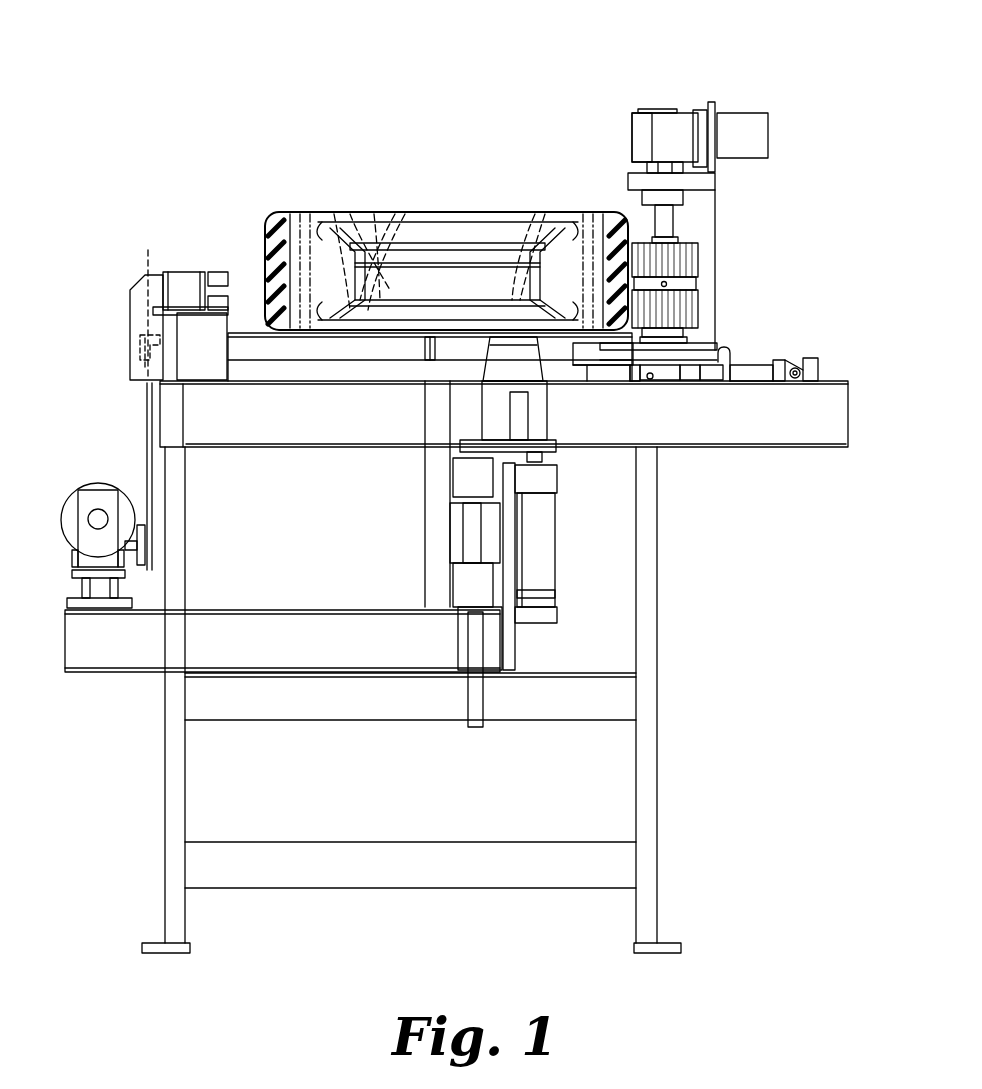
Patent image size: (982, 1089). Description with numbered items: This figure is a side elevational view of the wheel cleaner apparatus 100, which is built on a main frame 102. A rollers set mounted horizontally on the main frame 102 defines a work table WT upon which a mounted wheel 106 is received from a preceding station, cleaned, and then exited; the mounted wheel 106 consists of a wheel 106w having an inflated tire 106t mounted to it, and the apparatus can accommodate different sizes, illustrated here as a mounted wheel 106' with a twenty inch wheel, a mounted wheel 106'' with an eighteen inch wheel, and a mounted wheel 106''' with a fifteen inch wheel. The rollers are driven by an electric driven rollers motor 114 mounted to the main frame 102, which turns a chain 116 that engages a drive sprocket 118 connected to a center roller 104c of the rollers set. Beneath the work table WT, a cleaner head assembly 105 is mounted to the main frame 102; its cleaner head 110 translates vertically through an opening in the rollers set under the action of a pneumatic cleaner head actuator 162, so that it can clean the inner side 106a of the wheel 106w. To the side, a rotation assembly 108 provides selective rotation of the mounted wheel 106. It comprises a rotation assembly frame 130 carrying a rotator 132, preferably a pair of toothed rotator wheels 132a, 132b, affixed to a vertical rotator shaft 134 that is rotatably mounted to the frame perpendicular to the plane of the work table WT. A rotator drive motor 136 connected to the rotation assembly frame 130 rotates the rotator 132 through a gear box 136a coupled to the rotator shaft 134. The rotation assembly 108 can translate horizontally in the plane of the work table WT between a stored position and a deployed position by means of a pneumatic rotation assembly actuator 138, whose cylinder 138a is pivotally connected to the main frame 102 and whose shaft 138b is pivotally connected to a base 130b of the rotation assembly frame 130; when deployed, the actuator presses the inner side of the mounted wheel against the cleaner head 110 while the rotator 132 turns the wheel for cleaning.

The wheel cleaner apparatus 100 is at (711, 76).
The main frame 102 is at (654, 610).
The center roller 104c is at (137, 355).
The cleaner head assembly 105 is at (564, 548).
The mounted wheel 106 is at (440, 207).
The mounted wheel having a twenty inch wheel 106' is at (301, 220).
The mounted wheel having an eighteen inch wheel 106'' is at (344, 197).
The mounted wheel having a fifteen inch wheel 106''' is at (440, 218).
The inner side of the wheel 106a is at (398, 214).
The inflated tire 106t is at (598, 212).
The wheel 106w is at (478, 212).
The rotation assembly 108 is at (737, 212).
The cleaner head 110 is at (480, 408).
The driven rollers motor 114 is at (98, 483).
The chain 116 is at (146, 420).
The drive sprocket 118 is at (148, 250).
The rotation assembly frame 130 is at (720, 263).
The base 130b is at (726, 356).
The rotator 132 is at (706, 280).
The toothed rotator wheel 132a is at (702, 256).
The toothed rotator wheel 132b is at (697, 320).
The rotator shaft 134 is at (672, 208).
The rotator drive motor 136 is at (746, 112).
The gear box 136a is at (640, 115).
The rotation assembly actuator 138 is at (754, 362).
The cylinder 138a is at (785, 358).
The shaft 138b is at (652, 381).
The cleaner head actuator 162 is at (552, 590).
The work table WT is at (262, 325).